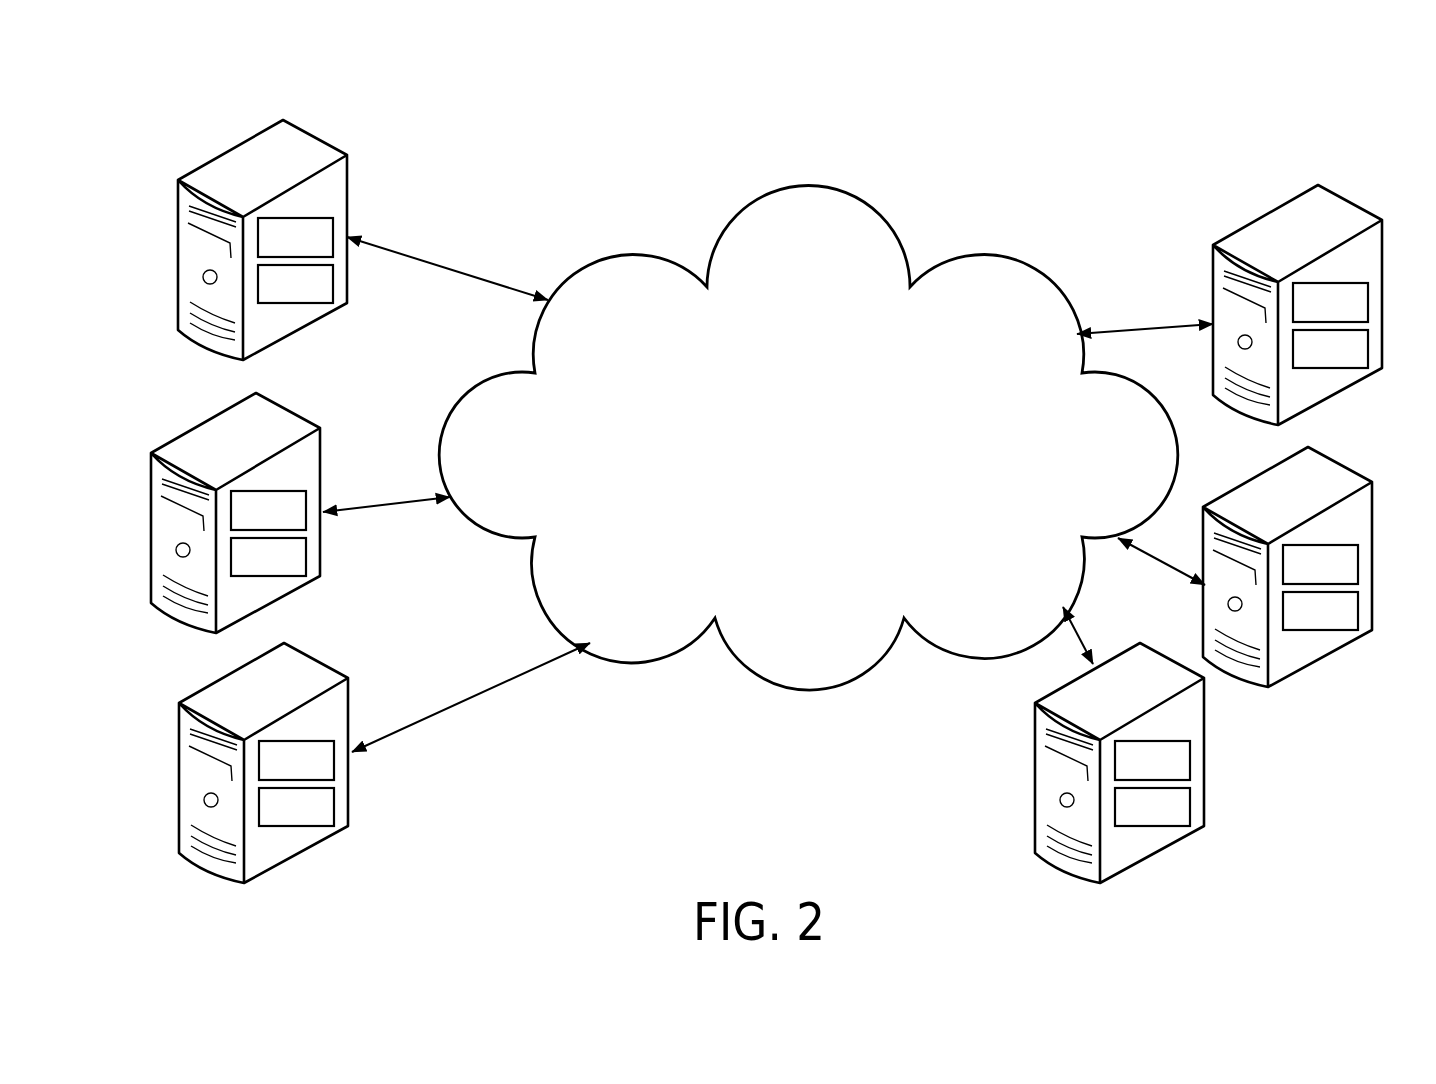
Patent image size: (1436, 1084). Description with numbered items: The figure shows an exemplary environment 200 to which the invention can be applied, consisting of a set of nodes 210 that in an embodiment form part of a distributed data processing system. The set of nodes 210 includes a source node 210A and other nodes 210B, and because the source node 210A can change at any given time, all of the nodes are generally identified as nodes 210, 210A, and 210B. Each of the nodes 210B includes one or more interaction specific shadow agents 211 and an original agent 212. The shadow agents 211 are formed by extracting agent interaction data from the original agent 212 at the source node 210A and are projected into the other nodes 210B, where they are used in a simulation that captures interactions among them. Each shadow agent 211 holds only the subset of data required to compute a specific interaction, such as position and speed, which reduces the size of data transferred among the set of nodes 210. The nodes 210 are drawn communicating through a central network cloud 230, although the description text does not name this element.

The environment 200 is at (237, 88).
The set of nodes 210 is at (385, 112).
The source node 210A is at (432, 158).
The other nodes 210B is at (480, 207).
The interaction specific shadow agents 211 is at (276, 249).
The original agent 212 is at (276, 296).
The network cloud 230 is at (786, 453).